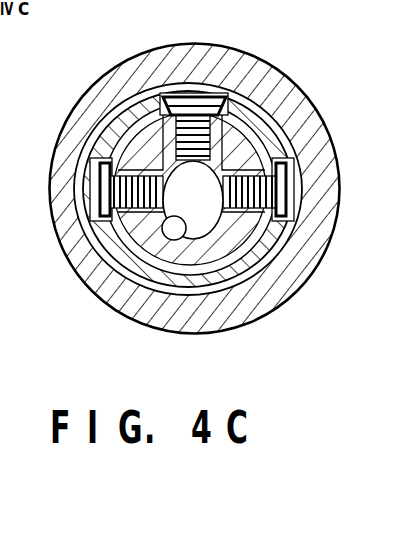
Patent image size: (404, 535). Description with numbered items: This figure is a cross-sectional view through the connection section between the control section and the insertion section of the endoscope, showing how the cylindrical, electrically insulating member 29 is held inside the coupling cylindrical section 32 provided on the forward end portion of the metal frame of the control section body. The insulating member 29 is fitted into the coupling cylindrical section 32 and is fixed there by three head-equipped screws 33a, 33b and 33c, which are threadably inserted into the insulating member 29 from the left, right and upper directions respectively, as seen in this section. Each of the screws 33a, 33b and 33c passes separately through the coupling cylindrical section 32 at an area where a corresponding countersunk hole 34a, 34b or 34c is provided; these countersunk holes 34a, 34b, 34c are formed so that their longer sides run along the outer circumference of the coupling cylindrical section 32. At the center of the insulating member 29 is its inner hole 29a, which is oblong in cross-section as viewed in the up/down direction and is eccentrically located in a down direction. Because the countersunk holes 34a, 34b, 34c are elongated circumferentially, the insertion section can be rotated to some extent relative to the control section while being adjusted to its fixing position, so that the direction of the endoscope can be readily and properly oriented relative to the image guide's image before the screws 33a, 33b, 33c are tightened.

The insulating member 29 is at (293, 122).
The inner hole 29a is at (122, 289).
The coupling cylindrical section 32 is at (272, 303).
The head-equipped screw 33a is at (100, 210).
The head-equipped screw 33b is at (283, 181).
The head-equipped screw 33c is at (203, 100).
The countersunk hole 34a is at (98, 248).
The countersunk hole 34b is at (318, 258).
The countersunk hole 34c is at (250, 118).